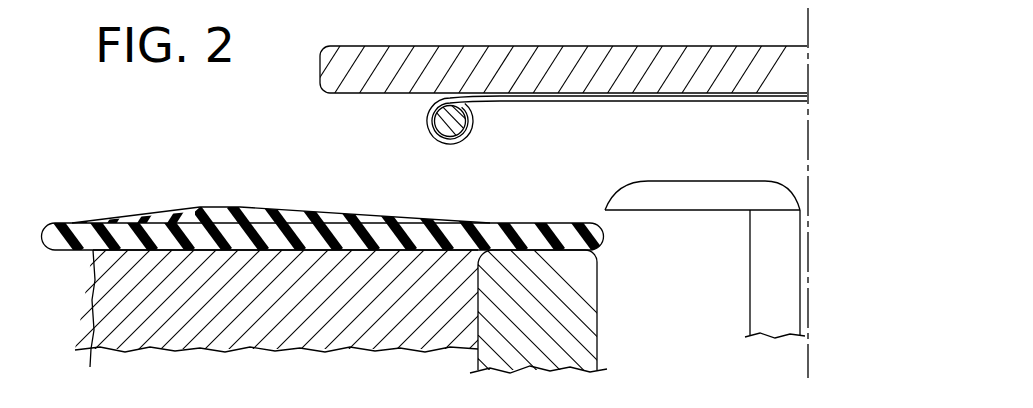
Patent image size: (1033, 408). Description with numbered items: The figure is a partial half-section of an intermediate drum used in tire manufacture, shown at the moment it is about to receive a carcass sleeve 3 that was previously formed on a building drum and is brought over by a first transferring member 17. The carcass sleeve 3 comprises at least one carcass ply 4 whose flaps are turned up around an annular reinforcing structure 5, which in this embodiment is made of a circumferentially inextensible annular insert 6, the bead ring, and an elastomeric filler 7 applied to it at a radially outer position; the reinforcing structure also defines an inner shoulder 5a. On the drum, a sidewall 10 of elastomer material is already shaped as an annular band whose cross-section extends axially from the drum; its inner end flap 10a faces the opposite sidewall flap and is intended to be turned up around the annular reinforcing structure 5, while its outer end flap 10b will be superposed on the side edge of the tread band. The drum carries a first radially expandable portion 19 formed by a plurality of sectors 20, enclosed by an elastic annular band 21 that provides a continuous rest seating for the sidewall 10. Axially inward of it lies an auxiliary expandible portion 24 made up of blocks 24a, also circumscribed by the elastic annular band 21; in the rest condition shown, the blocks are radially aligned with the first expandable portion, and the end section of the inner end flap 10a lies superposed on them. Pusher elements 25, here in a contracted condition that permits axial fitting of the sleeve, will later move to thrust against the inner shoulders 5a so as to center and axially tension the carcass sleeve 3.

The carcass structure 3 is at (763, 101).
The carcass ply 4 is at (665, 98).
The annular reinforcing structure 5 is at (481, 121).
The inner shoulder 5a is at (497, 110).
The annular insert 6 is at (437, 120).
The elastomeric filler 7 is at (472, 110).
The sidewall 10 is at (245, 215).
The inner end flap 10a is at (373, 218).
The outer end flap 10b is at (158, 215).
The first transferring member 17 is at (643, 46).
The first radially expandable portion 19 is at (192, 228).
The sector 20 is at (195, 328).
The elastic annular band 21 is at (75, 236).
The auxiliary expandible portion 24 is at (599, 340).
The block 24a is at (577, 295).
The pusher element 25 is at (710, 197).